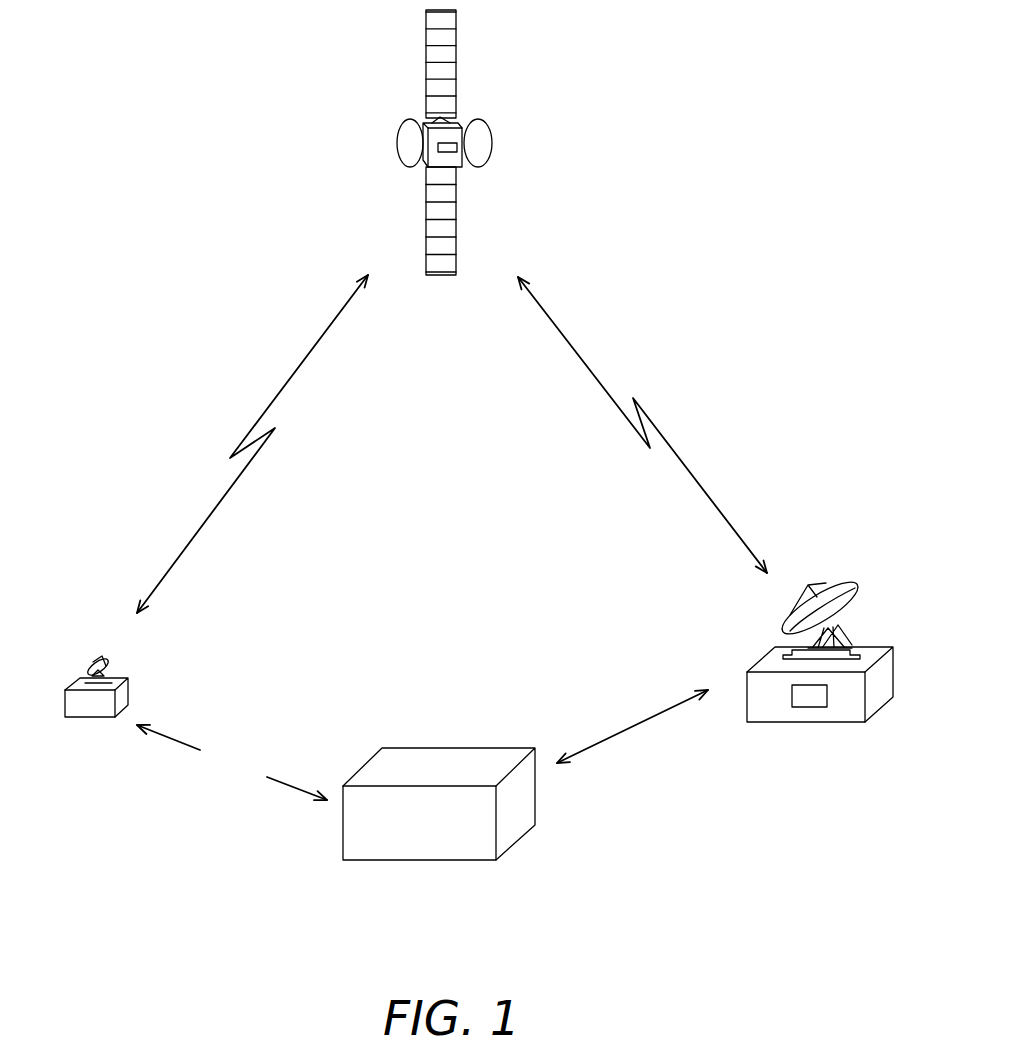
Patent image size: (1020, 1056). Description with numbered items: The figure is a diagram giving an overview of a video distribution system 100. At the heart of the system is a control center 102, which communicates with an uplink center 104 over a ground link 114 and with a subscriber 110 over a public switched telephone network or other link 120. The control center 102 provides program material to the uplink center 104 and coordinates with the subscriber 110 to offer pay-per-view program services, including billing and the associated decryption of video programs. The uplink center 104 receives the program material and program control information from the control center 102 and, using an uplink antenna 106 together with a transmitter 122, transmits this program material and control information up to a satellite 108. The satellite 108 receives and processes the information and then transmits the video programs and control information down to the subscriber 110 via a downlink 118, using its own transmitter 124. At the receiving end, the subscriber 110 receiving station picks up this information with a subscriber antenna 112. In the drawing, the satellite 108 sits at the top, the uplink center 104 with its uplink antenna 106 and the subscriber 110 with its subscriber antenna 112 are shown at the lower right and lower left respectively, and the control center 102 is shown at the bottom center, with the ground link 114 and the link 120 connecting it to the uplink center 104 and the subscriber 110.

The video distribution system 100 is at (720, 262).
The control center 102 is at (515, 842).
The uplink center 104 is at (802, 725).
The uplink antenna 106 is at (858, 592).
The satellite 108 is at (478, 167).
The subscriber 110 is at (130, 688).
The subscriber antenna 112 is at (96, 660).
The ground link 114 is at (625, 724).
The downlink 118 is at (300, 367).
The public switched telephone network or other link 120 is at (265, 735).
The transmitter 122 is at (827, 707).
The transmitter 124 is at (449, 141).